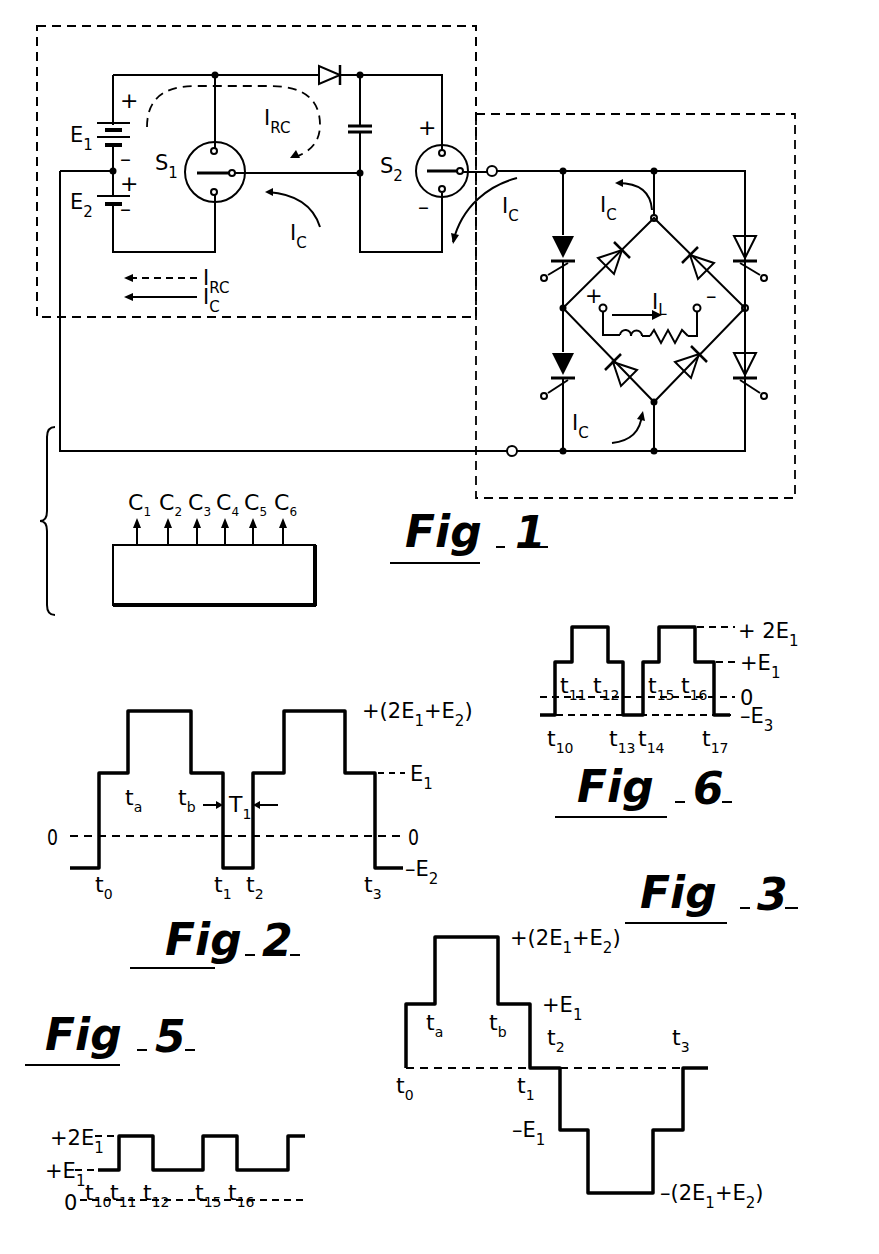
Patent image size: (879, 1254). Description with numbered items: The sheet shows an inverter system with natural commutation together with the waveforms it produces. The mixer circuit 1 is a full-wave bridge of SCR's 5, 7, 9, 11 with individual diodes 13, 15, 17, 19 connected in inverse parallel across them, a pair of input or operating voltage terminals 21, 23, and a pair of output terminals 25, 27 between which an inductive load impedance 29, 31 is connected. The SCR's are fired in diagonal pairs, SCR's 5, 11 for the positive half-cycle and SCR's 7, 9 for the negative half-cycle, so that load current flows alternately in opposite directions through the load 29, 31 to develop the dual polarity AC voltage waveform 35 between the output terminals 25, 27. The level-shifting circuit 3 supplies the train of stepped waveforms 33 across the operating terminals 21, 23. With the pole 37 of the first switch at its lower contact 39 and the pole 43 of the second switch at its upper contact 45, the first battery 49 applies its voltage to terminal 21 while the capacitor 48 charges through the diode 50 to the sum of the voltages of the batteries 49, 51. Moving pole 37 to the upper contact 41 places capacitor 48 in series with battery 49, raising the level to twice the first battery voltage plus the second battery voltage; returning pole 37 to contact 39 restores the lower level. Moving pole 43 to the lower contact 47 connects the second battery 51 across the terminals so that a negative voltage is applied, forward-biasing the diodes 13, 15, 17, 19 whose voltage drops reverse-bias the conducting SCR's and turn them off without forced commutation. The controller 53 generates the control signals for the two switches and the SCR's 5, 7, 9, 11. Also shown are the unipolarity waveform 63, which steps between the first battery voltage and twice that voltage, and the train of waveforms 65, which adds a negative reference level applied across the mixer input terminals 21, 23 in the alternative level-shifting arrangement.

In FIG. 1, the mixer circuit 1 is at (658, 113).
In FIG. 1, the waveform synthesizer or level-shifting circuit 3 is at (478, 47).
In FIG. 1, the SCR 5 is at (553, 245).
In FIG. 1, the SCR 7 is at (553, 356).
In FIG. 1, the SCR 9 is at (755, 244).
In FIG. 1, the SCR 11 is at (757, 360).
In FIG. 1, the diode 13 is at (629, 252).
In FIG. 1, the diode 15 is at (614, 374).
In FIG. 1, the diode 17 is at (697, 251).
In FIG. 1, the diode 19 is at (705, 365).
In FIG. 1, the input or operating voltage terminal 21 is at (497, 167).
In FIG. 1, the input or operating voltage terminal 23 is at (511, 446).
In FIG. 1, the output terminal 25 is at (606, 305).
In FIG. 1, the output terminal 27 is at (697, 305).
In FIG. 1, the load impedance (inductive portion) 29 is at (628, 345).
In FIG. 1, the load impedance (resistive portion) 31 is at (681, 345).
In FIG. 2, the train of stepped waveforms 33 is at (155, 711).
In FIG. 3, the dual polarity AC voltage waveform 35 is at (475, 936).
In FIG. 1, the pole of switch S1 37 is at (219, 168).
In FIG. 1, the lower contact of switch S1 39 is at (218, 193).
In FIG. 1, the upper contact of switch S1 41 is at (211, 146).
In FIG. 1, the pole of switch S2 43 is at (448, 168).
In FIG. 1, the upper contact of switch S2 45 is at (447, 150).
In FIG. 1, the lower contact of switch S2 47 is at (435, 192).
In FIG. 1, the capacitor 48 is at (366, 122).
In FIG. 1, the battery 49 is at (100, 118).
In FIG. 1, the diode 50 is at (345, 70).
In FIG. 1, the battery 51 is at (130, 201).
In FIG. 1, the controller 53 is at (316, 577).
In FIG. 5, the unipolarity waveform 63 is at (216, 1135).
In FIG. 6, the train of waveforms 65 is at (591, 626).